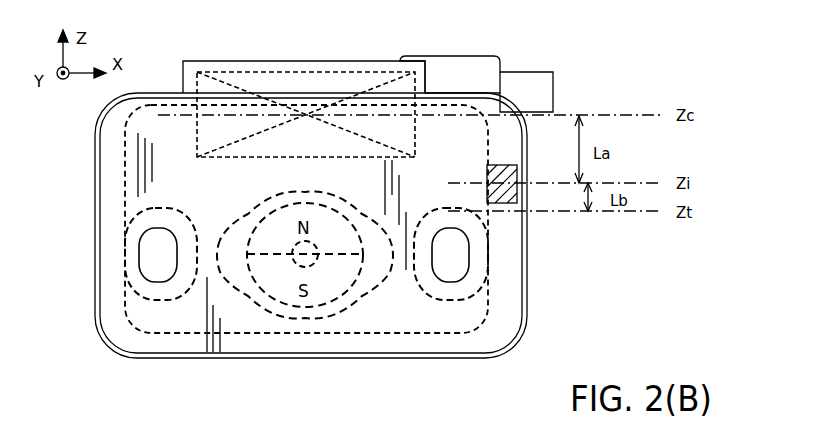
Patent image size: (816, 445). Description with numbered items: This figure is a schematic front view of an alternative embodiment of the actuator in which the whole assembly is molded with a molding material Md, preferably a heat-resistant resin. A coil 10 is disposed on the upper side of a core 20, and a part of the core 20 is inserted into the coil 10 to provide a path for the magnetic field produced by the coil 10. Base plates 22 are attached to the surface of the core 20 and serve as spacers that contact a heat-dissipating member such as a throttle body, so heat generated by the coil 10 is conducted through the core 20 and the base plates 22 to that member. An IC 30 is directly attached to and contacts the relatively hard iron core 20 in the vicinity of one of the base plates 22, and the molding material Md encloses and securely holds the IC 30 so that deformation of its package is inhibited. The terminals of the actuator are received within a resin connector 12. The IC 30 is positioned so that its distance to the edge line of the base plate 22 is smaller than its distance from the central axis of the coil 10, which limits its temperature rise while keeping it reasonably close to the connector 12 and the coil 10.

The coil 10 is at (197, 132).
The connector 12 is at (463, 68).
The core 20 is at (278, 333).
The base plates 22 is at (157, 298).
The IC 30 is at (506, 192).
The molding material Md is at (507, 297).